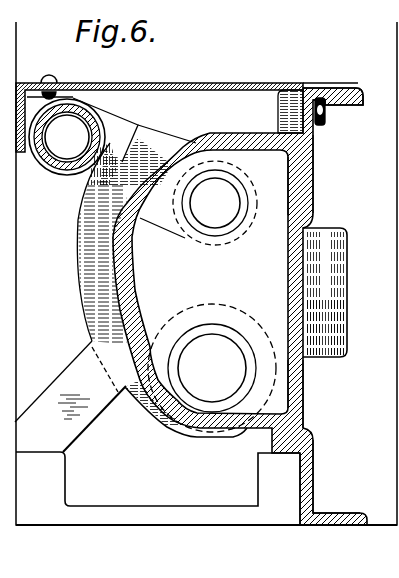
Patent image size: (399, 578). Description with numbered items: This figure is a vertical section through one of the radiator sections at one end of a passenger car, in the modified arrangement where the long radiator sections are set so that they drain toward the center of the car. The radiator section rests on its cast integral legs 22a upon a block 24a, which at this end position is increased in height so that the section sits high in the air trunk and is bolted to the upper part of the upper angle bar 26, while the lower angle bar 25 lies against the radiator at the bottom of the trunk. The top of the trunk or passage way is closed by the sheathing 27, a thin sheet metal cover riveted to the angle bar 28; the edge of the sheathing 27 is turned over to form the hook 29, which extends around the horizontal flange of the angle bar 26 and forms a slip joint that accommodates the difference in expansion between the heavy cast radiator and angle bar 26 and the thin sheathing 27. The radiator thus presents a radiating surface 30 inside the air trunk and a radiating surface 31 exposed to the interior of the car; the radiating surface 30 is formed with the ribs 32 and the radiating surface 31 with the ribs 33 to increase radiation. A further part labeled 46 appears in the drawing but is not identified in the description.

The integral legs 22a is at (70, 390).
The block 24a is at (283, 485).
The lower angle bar 25 is at (313, 478).
The upper angle bar 26 is at (314, 161).
The sheathing 27 is at (214, 83).
The angle bar 28 is at (29, 85).
The hook 29 is at (366, 88).
The radiating surface 30 is at (137, 287).
The radiating surface 31 is at (293, 397).
The ribs 32 is at (100, 270).
The ribs 33 is at (332, 280).
The inclined bracket 46 is at (60, 172).